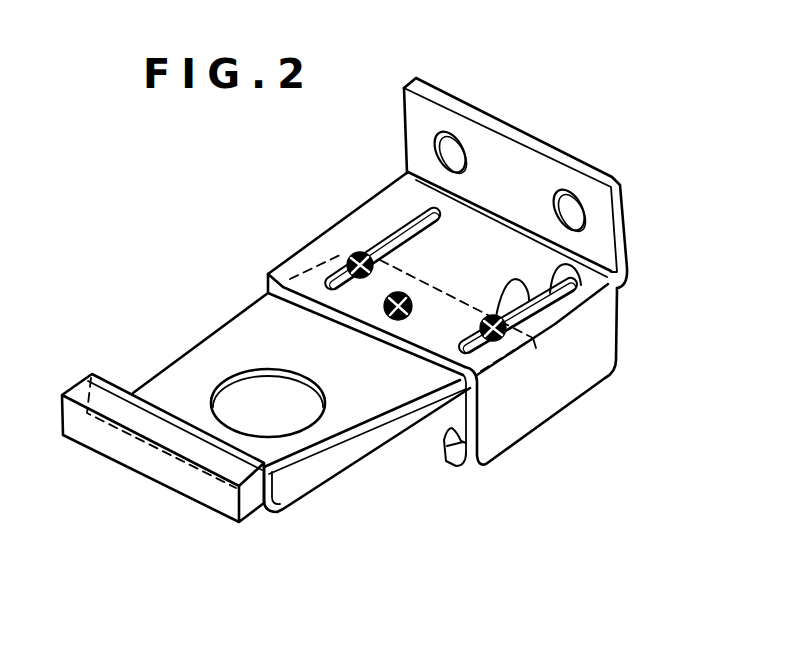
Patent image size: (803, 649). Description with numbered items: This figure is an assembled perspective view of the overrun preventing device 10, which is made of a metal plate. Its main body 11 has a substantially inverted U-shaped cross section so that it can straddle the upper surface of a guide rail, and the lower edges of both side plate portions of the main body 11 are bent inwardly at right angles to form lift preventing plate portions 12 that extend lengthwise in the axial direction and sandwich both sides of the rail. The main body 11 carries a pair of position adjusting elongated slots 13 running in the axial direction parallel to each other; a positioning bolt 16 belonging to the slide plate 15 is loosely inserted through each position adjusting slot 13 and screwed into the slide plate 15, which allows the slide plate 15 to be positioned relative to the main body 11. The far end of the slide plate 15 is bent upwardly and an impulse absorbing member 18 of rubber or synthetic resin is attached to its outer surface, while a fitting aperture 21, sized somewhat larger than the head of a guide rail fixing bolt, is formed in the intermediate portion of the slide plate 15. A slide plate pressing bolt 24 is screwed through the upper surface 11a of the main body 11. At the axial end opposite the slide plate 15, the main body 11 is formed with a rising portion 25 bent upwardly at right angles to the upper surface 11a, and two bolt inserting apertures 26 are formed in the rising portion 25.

The overrun preventing device 10 is at (567, 139).
The main body 11 is at (510, 433).
The upper surface 11a is at (313, 260).
The lift preventing plate portion 12 is at (447, 430).
The position adjusting elongated slot 13 is at (574, 272).
The slide plate 15 is at (217, 365).
The positioning bolt 16 is at (536, 292).
The impulse absorbing member 18 is at (72, 392).
The fitting aperture 21 is at (270, 404).
The slide plate pressing bolt 24 is at (397, 299).
The rising portion 25 is at (460, 122).
The bolt inserting aperture 26 is at (571, 206).